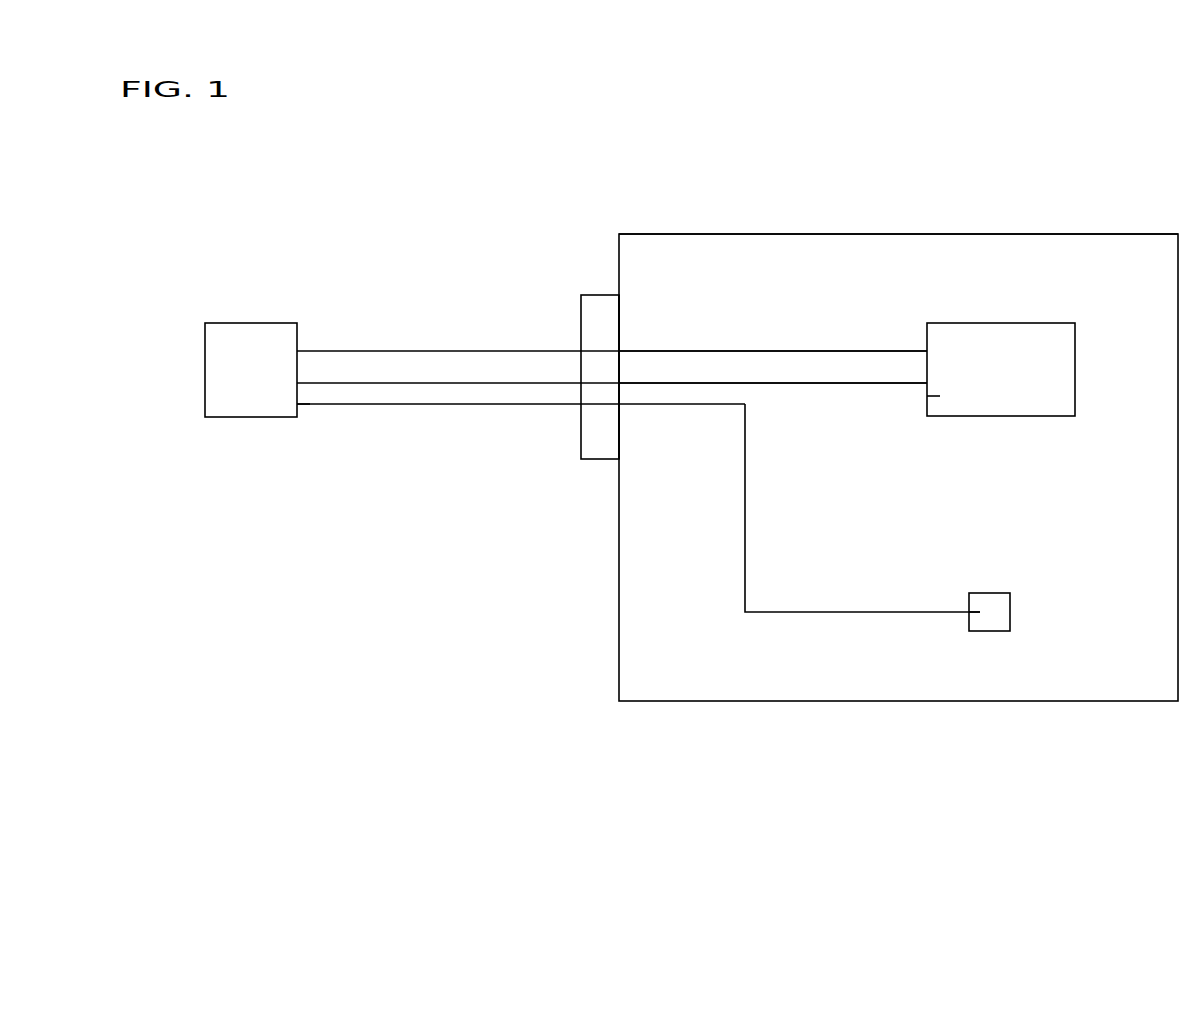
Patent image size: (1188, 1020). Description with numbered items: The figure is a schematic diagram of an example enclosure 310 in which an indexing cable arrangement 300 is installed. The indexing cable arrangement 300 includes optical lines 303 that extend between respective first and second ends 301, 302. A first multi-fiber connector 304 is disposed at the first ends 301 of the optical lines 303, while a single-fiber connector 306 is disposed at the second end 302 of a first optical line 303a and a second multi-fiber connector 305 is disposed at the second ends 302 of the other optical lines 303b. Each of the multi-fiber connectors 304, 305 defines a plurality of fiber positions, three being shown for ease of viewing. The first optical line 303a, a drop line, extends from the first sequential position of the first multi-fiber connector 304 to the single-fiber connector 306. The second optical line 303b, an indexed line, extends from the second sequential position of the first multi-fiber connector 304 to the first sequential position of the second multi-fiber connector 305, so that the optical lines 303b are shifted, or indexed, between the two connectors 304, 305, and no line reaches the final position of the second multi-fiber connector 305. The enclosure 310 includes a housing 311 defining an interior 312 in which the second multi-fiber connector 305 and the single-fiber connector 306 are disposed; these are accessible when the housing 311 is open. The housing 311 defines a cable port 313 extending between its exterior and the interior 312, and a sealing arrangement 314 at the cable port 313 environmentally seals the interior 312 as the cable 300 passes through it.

The indexing cable arrangement 300 is at (467, 465).
The first ends 301 is at (295, 403).
The second ends 302 is at (937, 385).
The optical lines 303 is at (414, 348).
The first optical line 303a is at (762, 613).
The second optical line 303b is at (745, 350).
The first multi-fiber connector 304 is at (245, 323).
The second multi-fiber connector 305 is at (972, 323).
The single-fiber connector 306 is at (1010, 613).
The enclosure 310 is at (1001, 212).
The housing 311 is at (1132, 234).
The interior 312 is at (1035, 531).
The cable port 313 is at (619, 430).
The sealing arrangement 314 is at (582, 310).